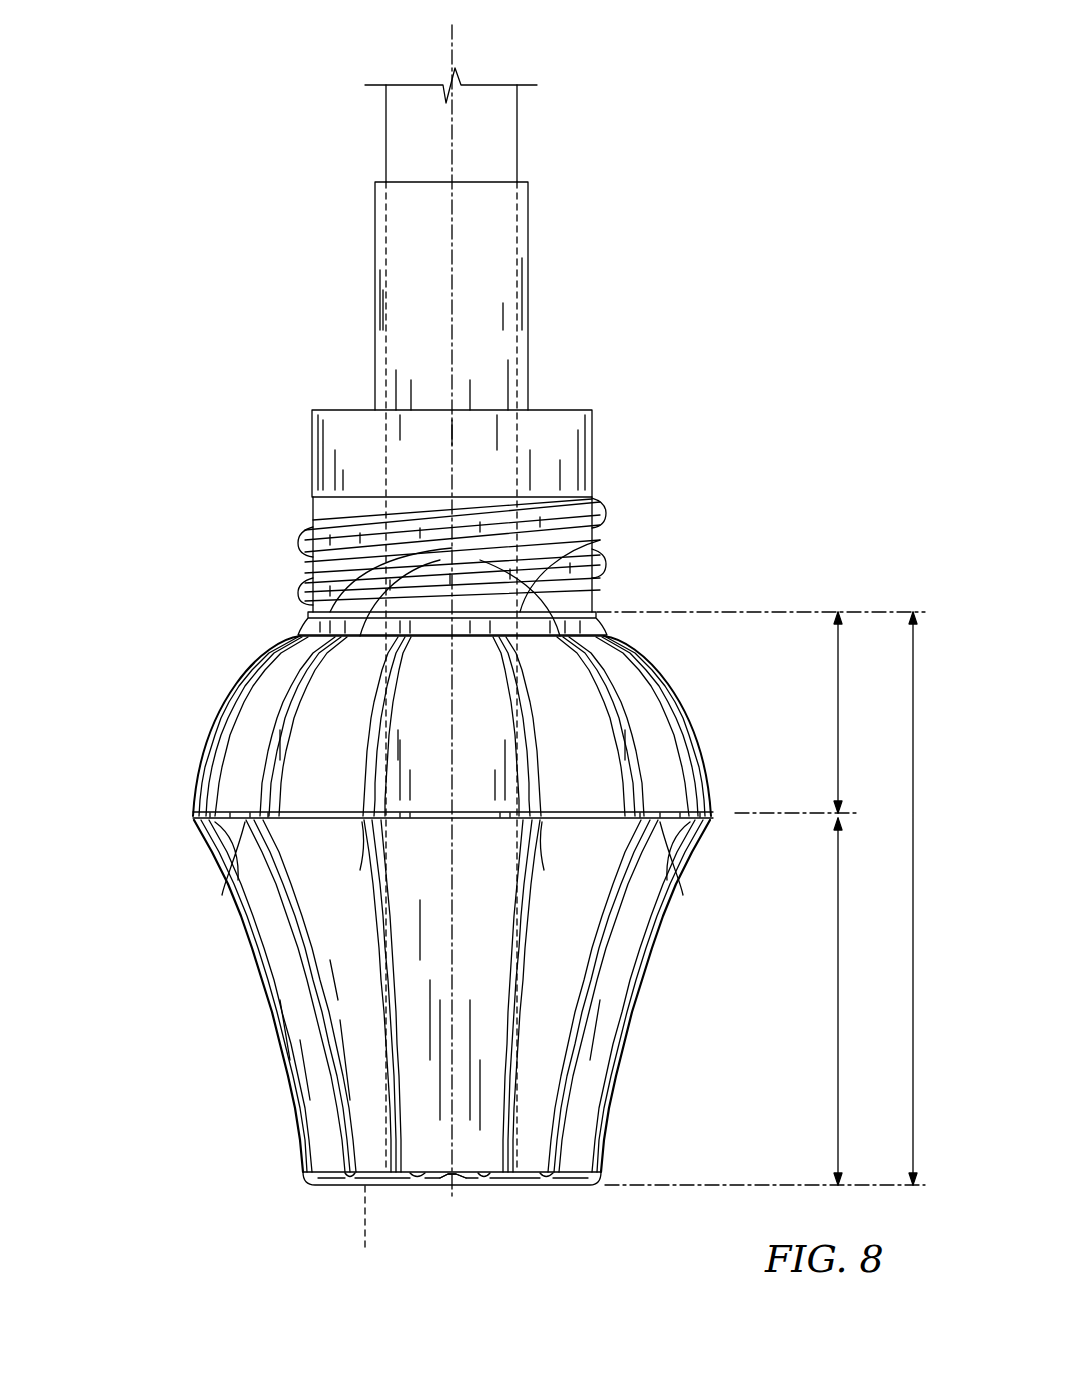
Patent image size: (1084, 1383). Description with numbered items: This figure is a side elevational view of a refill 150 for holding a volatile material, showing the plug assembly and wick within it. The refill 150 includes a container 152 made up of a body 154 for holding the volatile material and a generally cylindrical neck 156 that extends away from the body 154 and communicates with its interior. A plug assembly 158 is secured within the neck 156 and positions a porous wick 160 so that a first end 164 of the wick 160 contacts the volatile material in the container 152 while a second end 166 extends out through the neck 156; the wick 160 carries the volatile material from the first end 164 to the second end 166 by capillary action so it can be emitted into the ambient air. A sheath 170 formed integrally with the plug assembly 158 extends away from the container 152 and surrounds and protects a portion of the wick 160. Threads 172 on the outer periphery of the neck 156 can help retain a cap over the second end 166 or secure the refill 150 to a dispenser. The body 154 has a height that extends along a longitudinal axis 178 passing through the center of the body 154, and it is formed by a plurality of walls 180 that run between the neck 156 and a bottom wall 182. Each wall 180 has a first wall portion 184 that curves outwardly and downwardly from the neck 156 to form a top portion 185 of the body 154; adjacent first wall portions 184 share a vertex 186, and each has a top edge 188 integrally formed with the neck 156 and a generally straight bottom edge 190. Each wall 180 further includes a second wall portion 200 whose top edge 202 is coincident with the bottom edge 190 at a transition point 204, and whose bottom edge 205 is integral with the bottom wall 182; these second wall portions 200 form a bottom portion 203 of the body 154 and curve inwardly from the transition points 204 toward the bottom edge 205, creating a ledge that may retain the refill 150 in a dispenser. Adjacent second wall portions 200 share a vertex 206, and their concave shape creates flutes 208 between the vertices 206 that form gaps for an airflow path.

The refill 150 is at (672, 252).
The container 152 is at (475, 720).
The body 154 is at (431, 1047).
The neck 156 is at (596, 497).
The plug assembly 158 is at (596, 440).
The porous wick 160 is at (510, 174).
The first end 164 is at (367, 1230).
The second end 166 is at (510, 140).
The sheath 170 is at (530, 320).
The threads 172 is at (607, 525).
The longitudinal axis 178 is at (452, 58).
The walls 180 is at (300, 745).
The bottom wall 182 is at (467, 1186).
The first wall portion 184 is at (332, 667).
The top portion 185 is at (150, 635).
The vertex 186 is at (288, 704).
The top edge 188 is at (330, 612).
The bottom edge 190 is at (215, 812).
The second wall portions 200 is at (687, 980).
The top edge 202 is at (222, 857).
The bottom portion 203 is at (197, 1005).
The transition point 204 is at (210, 830).
The bottom edge 205 is at (607, 1207).
The vertex 206 is at (397, 1062).
The flutes 208 is at (317, 1077).